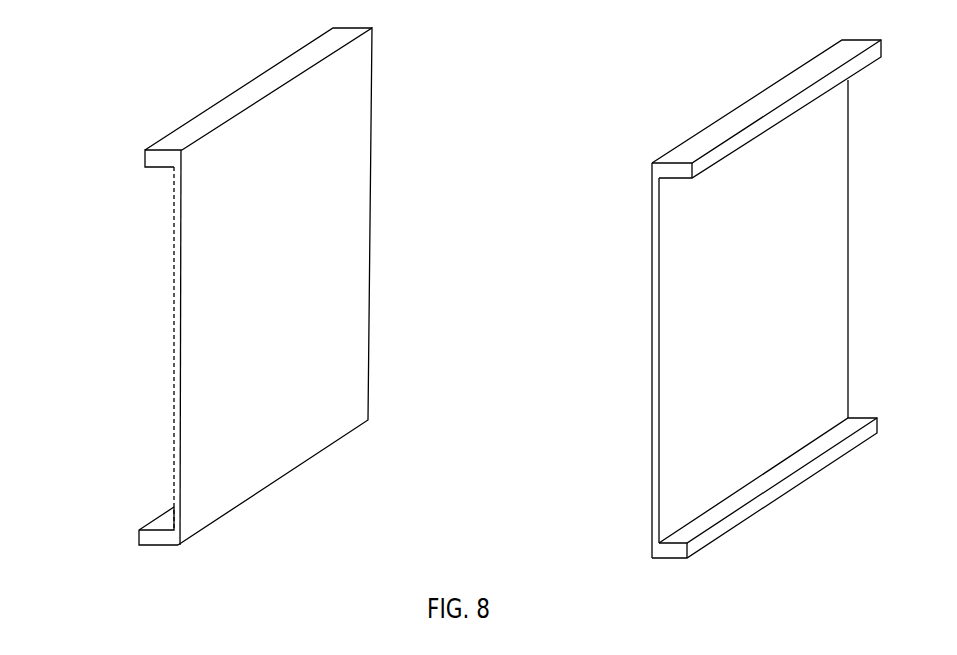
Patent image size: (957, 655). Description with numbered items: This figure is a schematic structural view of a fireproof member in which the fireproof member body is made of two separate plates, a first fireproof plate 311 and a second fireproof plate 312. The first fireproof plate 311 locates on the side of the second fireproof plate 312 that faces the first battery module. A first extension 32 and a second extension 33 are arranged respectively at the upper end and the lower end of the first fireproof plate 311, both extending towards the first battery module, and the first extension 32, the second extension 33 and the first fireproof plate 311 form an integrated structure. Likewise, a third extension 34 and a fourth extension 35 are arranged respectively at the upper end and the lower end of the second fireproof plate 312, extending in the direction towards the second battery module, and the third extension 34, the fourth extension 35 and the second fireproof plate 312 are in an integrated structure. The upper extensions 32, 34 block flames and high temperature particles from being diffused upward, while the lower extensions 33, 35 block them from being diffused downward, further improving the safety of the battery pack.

The first fireproof plate 311 is at (180, 343).
The first extension 32 is at (148, 158).
The second extension 33 is at (146, 541).
The second fireproof plate 312 is at (658, 360).
The third extension 34 is at (680, 175).
The fourth extension 35 is at (672, 555).